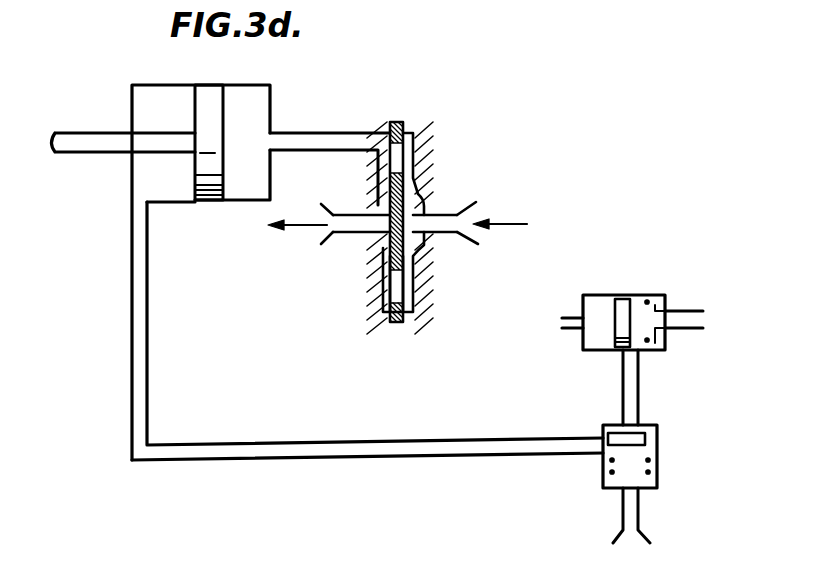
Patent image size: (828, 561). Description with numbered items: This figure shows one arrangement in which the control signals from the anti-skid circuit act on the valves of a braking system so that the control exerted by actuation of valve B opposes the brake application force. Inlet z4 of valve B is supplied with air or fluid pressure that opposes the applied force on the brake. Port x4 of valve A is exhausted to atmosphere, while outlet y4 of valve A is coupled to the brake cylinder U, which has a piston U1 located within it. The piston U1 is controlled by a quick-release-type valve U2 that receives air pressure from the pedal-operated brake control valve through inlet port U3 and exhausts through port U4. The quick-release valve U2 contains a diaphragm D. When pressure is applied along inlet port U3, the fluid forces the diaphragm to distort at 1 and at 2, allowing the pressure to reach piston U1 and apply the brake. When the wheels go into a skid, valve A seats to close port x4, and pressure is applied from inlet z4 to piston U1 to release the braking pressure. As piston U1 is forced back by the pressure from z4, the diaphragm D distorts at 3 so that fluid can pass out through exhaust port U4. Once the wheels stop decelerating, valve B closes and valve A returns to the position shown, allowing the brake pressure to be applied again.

The brake cylinder U is at (271, 183).
The piston U1 is at (208, 202).
The quick-release-type valve U2 is at (388, 306).
The inlet port U3 is at (478, 206).
The exhaust port U4 is at (345, 224).
The diaphragm D is at (391, 194).
The diaphragm distortion point 1 is at (417, 181).
The diaphragm distortion point 2 is at (407, 267).
The diaphragm distortion point 3 is at (386, 227).
The valve B is at (634, 295).
The inlet of valve B z4 is at (683, 322).
The valve A is at (657, 476).
The outlet of valve A y4 is at (601, 446).
The port of valve A x4 is at (636, 516).